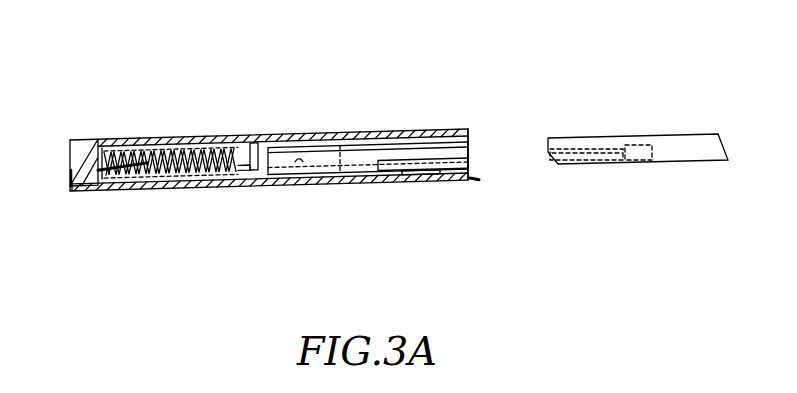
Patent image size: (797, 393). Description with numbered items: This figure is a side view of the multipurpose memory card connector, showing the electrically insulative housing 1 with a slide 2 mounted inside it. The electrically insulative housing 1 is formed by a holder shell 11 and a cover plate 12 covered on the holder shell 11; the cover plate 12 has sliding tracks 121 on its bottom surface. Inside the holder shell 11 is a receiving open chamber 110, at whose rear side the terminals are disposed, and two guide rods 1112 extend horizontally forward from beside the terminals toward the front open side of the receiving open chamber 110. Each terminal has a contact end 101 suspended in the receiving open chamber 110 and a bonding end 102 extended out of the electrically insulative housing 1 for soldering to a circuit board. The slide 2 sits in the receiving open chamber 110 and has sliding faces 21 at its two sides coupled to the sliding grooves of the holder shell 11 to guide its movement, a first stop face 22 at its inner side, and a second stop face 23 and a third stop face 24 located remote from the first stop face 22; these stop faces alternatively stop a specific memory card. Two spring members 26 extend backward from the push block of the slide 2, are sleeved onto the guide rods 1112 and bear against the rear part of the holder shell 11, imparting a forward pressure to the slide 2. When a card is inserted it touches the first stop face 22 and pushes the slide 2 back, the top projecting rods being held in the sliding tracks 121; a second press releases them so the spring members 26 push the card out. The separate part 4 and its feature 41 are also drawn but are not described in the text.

The electrically insulative housing 1 is at (497, 68).
The holder shell 11 is at (408, 101).
The cover plate 12 is at (170, 199).
The sliding tracks 121 is at (103, 186).
The bonding end 102 is at (67, 188).
The guide rods 1112 is at (104, 128).
The spring members 26 is at (157, 139).
The receiving open chamber 110 is at (96, 136).
The contact end 101 is at (129, 141).
The slide 2 is at (305, 136).
The second stop face 23 is at (368, 131).
The third stop face 24 is at (453, 129).
The sliding faces 21 is at (440, 191).
The first stop face 22 is at (196, 191).
The cover 4 is at (651, 177).
The recess 41 is at (585, 150).